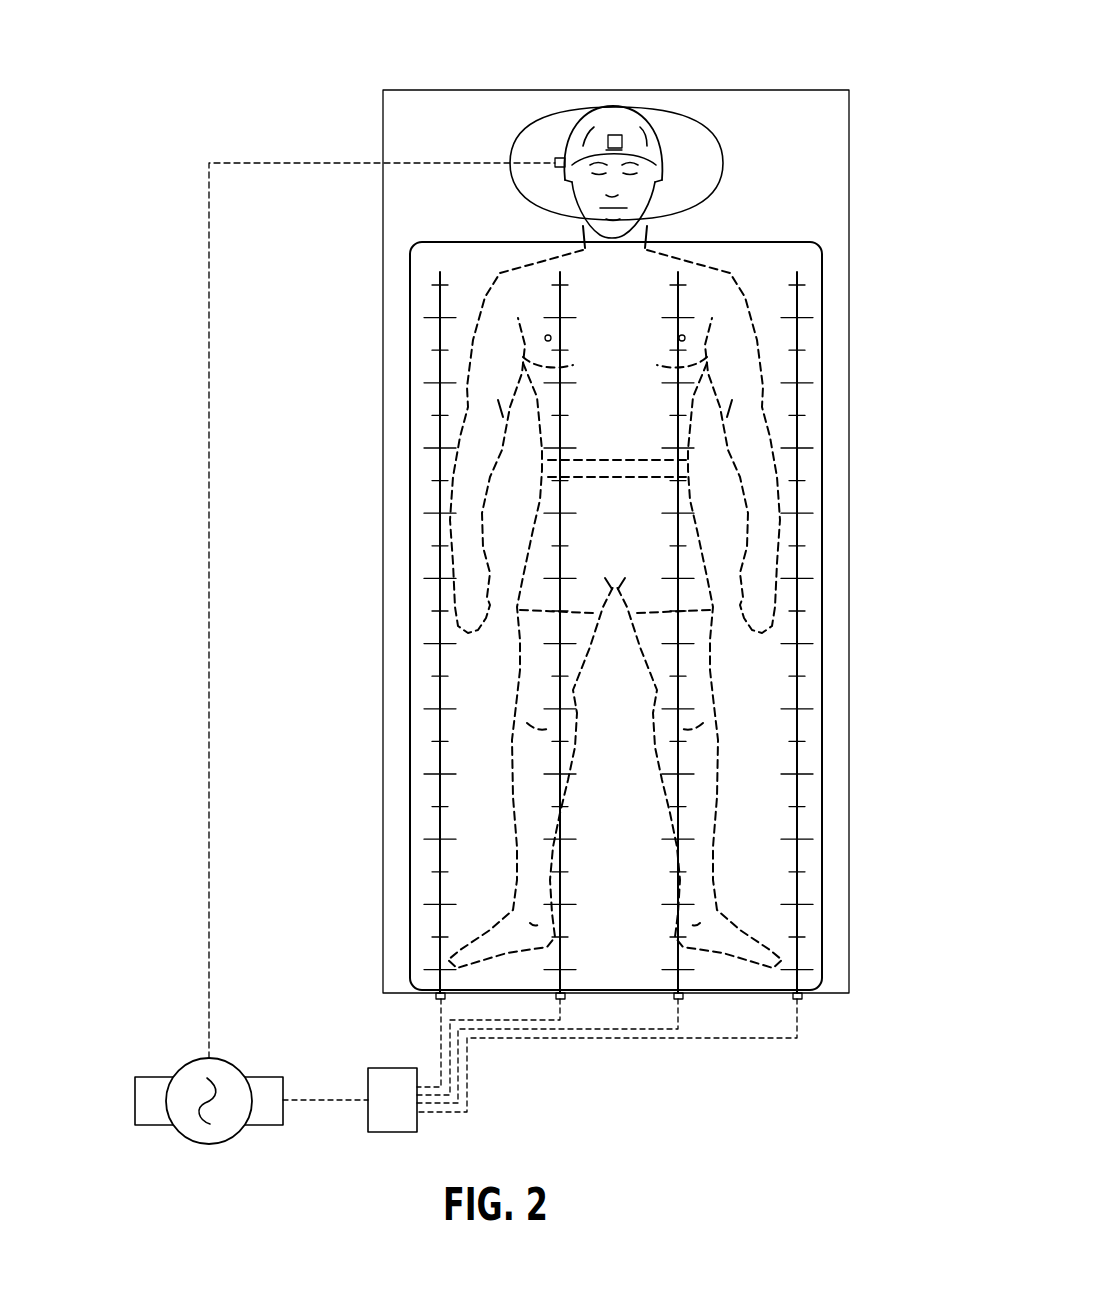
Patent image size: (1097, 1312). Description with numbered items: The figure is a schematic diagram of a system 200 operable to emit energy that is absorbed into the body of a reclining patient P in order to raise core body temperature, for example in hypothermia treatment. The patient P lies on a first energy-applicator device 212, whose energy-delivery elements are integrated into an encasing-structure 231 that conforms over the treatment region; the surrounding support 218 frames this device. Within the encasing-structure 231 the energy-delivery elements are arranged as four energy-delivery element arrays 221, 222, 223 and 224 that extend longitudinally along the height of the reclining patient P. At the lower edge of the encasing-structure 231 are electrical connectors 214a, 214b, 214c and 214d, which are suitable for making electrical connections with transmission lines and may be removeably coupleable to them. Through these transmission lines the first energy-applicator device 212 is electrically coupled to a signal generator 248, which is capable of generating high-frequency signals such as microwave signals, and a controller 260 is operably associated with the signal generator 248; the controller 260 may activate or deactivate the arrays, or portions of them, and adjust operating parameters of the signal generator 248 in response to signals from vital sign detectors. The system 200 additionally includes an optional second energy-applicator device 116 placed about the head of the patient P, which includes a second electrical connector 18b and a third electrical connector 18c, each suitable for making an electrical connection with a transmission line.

The system 200 is at (487, 574).
The second energy-applicator device 116 is at (607, 126).
The support pad 218 is at (382, 135).
The second electrical connector 18b is at (623, 138).
The third electrical connector 18c is at (558, 157).
The patient P is at (686, 171).
The energy-delivery element array 221 is at (426, 300).
The energy-delivery element array 222 is at (547, 300).
The energy-delivery element array 223 is at (692, 300).
The energy-delivery element array 224 is at (808, 300).
The first energy-applicator device 212 is at (565, 616).
The encasing-structure 231 is at (404, 638).
The electrical connector 214a is at (447, 997).
The electrical connector 214b is at (566, 997).
The electrical connector 214c is at (684, 997).
The electrical connector 214d is at (803, 997).
The controller 260 is at (393, 1068).
The signal generator 248 is at (135, 1100).